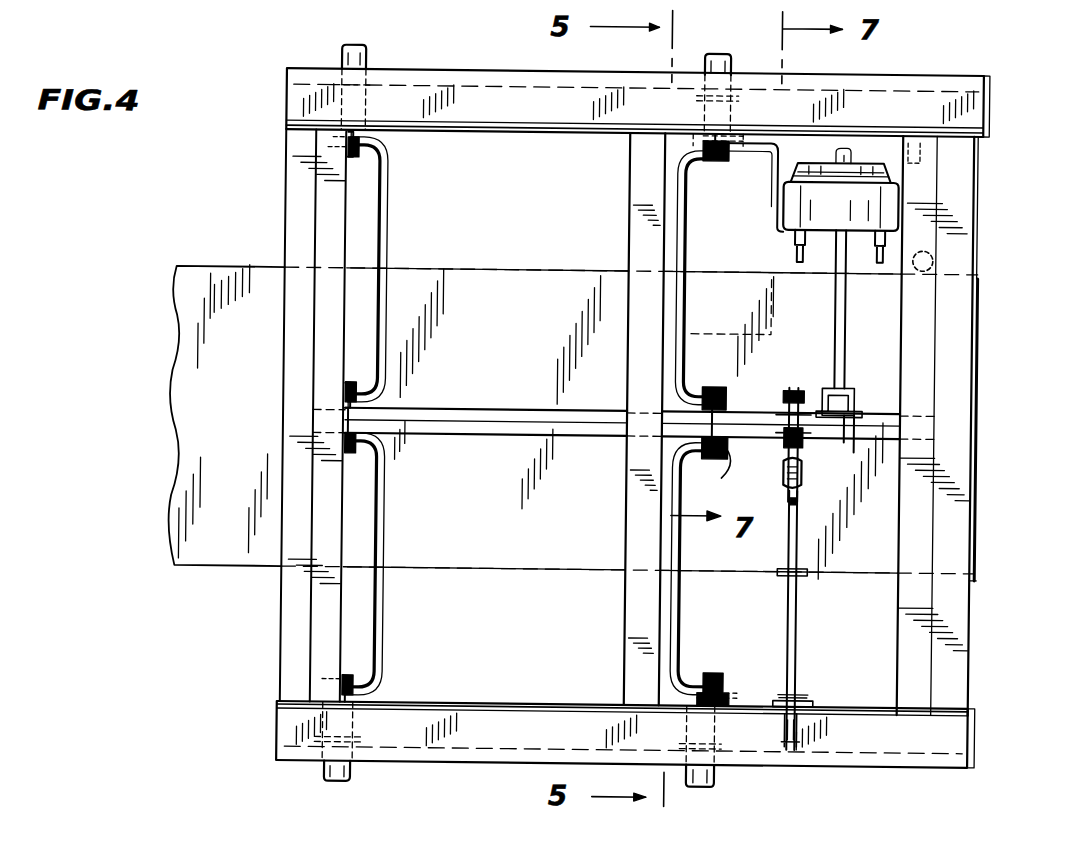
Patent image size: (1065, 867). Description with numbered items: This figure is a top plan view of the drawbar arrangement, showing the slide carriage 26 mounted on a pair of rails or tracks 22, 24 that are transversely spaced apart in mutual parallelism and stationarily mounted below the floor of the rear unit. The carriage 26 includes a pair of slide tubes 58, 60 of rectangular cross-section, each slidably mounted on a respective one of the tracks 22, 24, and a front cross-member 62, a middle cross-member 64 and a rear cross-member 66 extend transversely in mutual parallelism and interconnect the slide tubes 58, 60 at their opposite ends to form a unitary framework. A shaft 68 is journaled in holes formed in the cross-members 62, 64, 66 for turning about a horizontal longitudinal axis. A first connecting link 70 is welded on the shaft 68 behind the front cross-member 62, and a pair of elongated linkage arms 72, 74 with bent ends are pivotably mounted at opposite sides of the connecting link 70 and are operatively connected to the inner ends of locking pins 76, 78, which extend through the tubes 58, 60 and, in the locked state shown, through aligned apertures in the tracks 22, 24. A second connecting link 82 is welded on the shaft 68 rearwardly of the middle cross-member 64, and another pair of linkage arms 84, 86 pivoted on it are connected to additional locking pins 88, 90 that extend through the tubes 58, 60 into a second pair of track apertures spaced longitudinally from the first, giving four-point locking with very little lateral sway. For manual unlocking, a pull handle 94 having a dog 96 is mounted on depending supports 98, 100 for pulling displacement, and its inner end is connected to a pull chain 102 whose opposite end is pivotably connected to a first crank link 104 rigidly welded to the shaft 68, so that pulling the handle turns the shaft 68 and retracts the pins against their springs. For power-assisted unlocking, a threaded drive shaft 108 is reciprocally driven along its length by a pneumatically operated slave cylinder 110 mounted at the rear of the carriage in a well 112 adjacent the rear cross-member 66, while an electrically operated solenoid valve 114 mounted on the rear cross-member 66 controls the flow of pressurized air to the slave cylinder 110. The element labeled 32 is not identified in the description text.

The rail or track 22 is at (960, 80).
The rail or track 24 is at (887, 762).
The slide carriage 26 is at (1008, 205).
The side panel 32 is at (234, 572).
The slide tube 58 is at (448, 134).
The slide tube 60 is at (470, 702).
The front cross-member 62 is at (315, 316).
The middle cross-member 64 is at (628, 357).
The rear cross-member 66 is at (906, 372).
The shaft 68 is at (494, 404).
The first connecting link 70 is at (357, 385).
The linkage arm 72 is at (386, 246).
The linkage arm 74 is at (386, 498).
The locking pin 76 is at (366, 60).
The locking pin 78 is at (358, 775).
The second connecting link 82 is at (722, 458).
The linkage arm 84 is at (688, 326).
The linkage arm 86 is at (683, 627).
The additional locking pin 88 is at (722, 55).
The additional locking pin 90 is at (722, 784).
The pull handle 94 is at (798, 746).
The dog 96 is at (799, 642).
The depending support 98 is at (801, 699).
The depending support 100 is at (809, 568).
The pull chain 102 is at (784, 470).
The first crank link 104 is at (797, 385).
The threaded drive shaft 108 is at (845, 323).
The slave cylinder 110 is at (778, 231).
The well 112 is at (774, 188).
The solenoid valve 114 is at (931, 260).